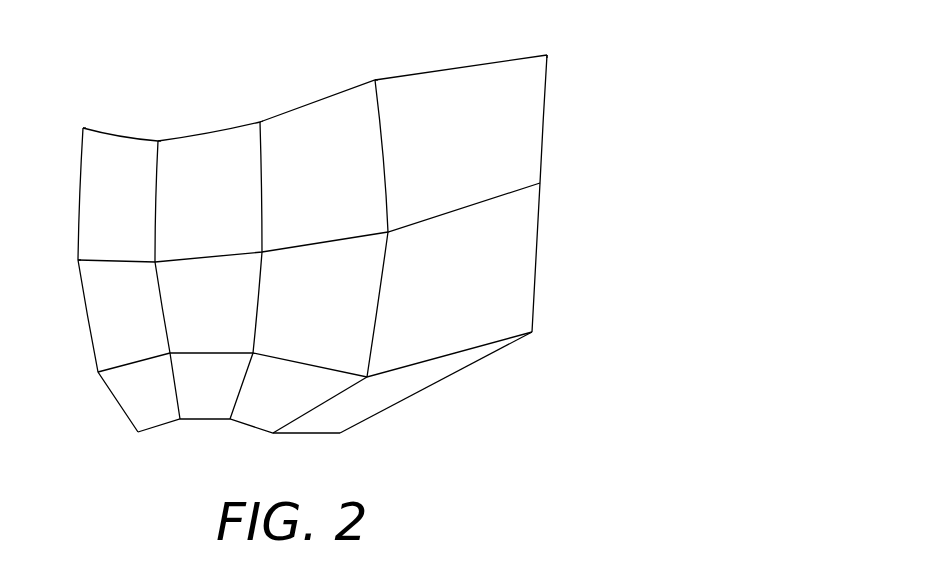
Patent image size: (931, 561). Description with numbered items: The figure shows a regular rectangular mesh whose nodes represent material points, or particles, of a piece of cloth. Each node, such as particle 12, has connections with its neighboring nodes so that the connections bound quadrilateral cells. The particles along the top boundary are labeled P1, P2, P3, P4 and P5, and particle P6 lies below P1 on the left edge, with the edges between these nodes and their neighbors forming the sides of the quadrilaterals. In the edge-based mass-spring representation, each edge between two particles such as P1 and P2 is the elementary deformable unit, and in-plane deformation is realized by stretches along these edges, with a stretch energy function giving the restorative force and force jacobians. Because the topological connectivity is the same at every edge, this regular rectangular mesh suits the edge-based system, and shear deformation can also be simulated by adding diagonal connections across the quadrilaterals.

The particle 12 is at (98, 372).
The particle P1 is at (85, 111).
The particle P2 is at (160, 123).
The particle P3 is at (262, 102).
The particle P4 is at (375, 61).
The particle P5 is at (548, 36).
The particle P6 is at (61, 264).